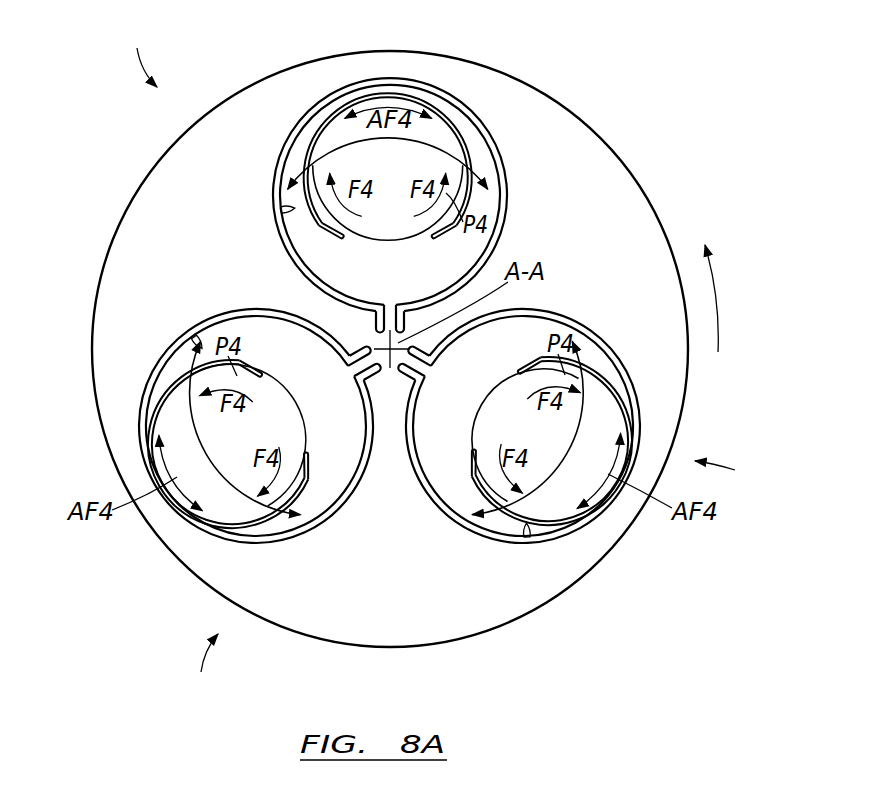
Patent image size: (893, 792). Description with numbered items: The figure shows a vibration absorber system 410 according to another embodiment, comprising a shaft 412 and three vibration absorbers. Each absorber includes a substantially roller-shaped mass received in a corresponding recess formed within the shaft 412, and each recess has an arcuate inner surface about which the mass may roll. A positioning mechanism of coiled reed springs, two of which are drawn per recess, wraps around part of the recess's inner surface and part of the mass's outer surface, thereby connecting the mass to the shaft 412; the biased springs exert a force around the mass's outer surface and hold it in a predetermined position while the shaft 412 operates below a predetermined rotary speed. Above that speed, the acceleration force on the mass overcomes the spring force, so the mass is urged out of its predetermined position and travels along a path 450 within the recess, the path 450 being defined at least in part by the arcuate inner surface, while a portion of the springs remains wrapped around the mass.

The vibration absorber system 410 is at (633, 90).
The shaft 412 is at (627, 164).
The path 450 is at (333, 143).